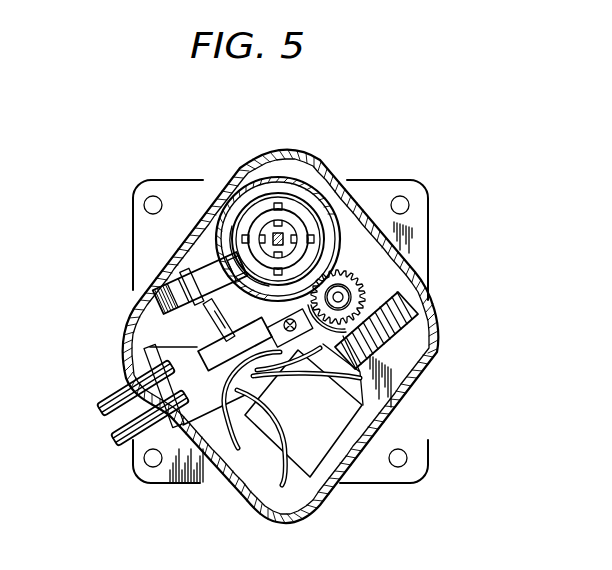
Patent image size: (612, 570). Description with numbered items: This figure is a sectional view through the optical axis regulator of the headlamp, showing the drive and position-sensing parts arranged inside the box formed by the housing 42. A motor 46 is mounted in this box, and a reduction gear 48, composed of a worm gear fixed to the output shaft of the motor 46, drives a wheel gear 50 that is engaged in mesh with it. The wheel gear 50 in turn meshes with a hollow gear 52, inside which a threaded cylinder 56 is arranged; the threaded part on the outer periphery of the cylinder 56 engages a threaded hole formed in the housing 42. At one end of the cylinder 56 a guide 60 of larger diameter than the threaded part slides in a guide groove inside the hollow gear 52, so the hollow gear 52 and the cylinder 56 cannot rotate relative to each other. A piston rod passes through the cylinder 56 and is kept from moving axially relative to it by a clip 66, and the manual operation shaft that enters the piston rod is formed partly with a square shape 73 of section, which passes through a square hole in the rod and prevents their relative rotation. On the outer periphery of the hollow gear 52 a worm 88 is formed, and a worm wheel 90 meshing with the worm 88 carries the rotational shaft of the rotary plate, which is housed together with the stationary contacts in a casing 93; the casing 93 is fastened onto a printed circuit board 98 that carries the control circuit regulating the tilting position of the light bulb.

The housing 42 is at (372, 447).
The motor 46 is at (357, 433).
The reduction gear 48 is at (387, 347).
The wheel gear 50 is at (380, 287).
The hollow gear 52 is at (342, 227).
The threaded cylinder 56 is at (320, 200).
The guide 60 is at (292, 207).
The clip 66 is at (252, 232).
The square shape 73 is at (272, 236).
The worm 88 is at (225, 250).
The worm wheel 90 is at (167, 282).
The casing 93 is at (200, 345).
The printed circuit board 98 is at (182, 480).